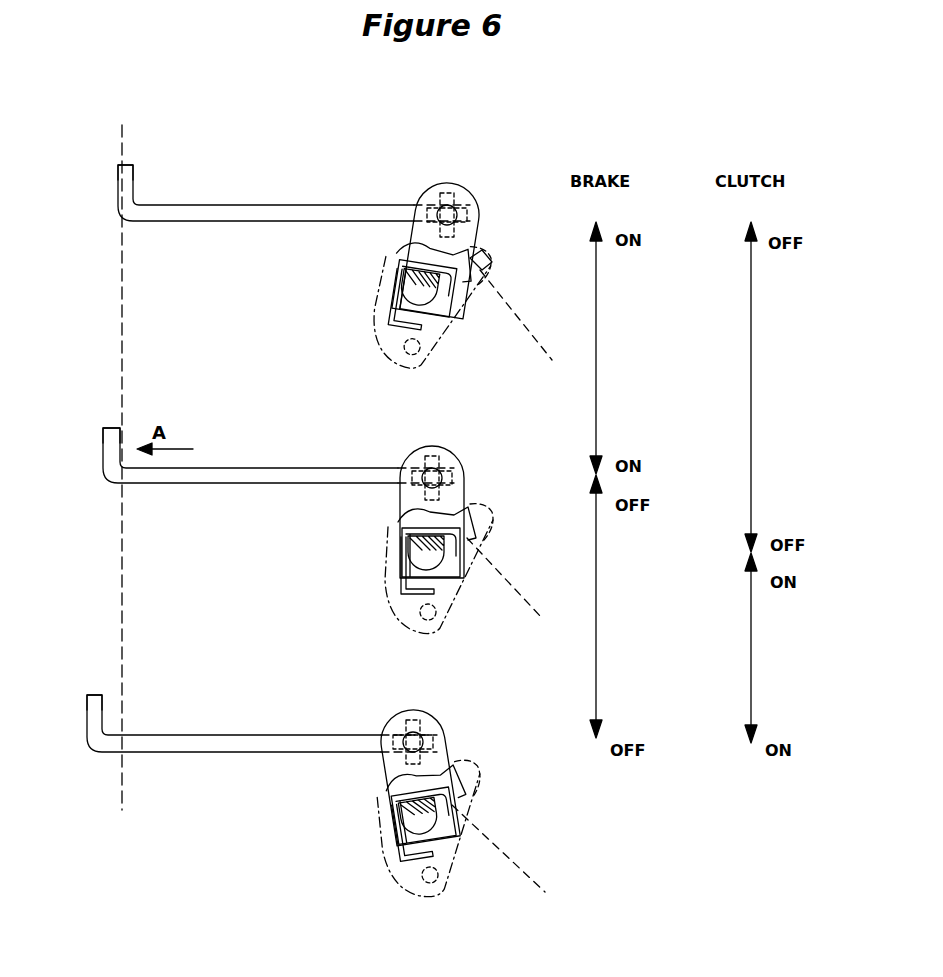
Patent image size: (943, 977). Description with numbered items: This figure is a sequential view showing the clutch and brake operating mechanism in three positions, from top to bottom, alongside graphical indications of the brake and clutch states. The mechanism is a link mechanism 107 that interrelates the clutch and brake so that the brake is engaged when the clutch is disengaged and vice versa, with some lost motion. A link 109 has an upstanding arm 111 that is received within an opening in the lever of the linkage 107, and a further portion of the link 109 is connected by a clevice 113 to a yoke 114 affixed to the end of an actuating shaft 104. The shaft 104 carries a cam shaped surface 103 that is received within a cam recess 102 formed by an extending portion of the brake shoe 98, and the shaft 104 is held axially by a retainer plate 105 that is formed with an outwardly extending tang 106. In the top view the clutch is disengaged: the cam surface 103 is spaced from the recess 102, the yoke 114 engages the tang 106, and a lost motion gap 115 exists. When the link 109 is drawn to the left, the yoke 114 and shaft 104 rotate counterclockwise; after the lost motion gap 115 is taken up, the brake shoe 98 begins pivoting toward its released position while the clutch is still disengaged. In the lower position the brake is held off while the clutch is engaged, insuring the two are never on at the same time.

The brake shoe 98 is at (393, 311).
The cam recess 102 is at (414, 253).
The cam shaped surface 103 is at (400, 272).
The actuating shaft 104 is at (449, 300).
The retainer plate 105 is at (468, 295).
The tang 106 is at (496, 256).
The link mechanism 107 is at (378, 196).
The link 109 is at (266, 213).
The upstanding arm 111 is at (118, 178).
The clevice 113 is at (462, 217).
The yoke 114 is at (466, 242).
The lost motion gap 115 is at (488, 270).